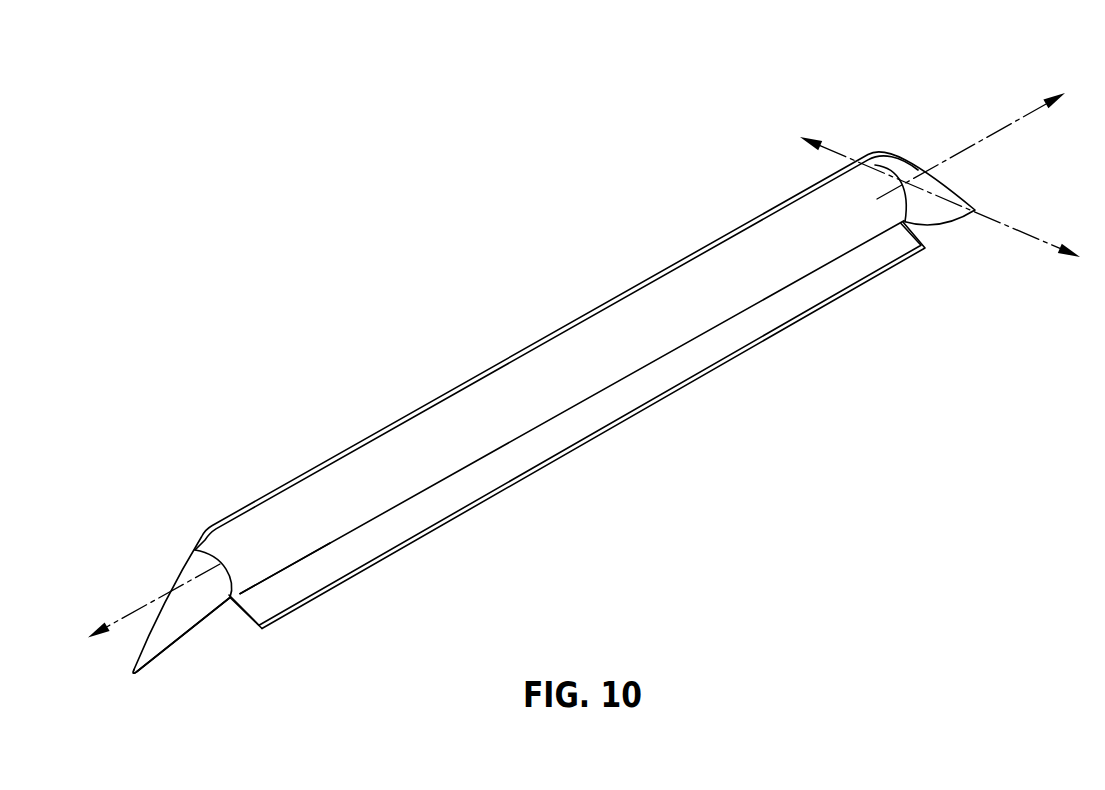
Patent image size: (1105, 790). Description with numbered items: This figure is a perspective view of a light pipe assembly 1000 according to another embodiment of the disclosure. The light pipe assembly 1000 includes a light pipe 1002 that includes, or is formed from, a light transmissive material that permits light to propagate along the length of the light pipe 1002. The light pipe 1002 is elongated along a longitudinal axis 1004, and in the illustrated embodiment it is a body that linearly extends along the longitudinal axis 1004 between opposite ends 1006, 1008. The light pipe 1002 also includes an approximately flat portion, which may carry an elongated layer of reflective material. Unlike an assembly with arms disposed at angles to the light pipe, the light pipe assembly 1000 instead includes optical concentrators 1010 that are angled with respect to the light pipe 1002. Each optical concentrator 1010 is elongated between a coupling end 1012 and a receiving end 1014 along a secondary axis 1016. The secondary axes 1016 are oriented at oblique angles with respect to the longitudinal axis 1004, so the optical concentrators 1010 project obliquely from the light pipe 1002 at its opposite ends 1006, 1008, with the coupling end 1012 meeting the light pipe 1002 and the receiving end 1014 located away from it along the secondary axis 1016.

The light pipe assembly 1000 is at (291, 145).
The light pipe 1002 is at (453, 519).
The longitudinal axis 1004 is at (1015, 123).
The end 1006 is at (213, 568).
The end 1008 is at (900, 200).
The optical concentrator 1010 is at (203, 623).
The coupling end 1012 is at (231, 593).
The receiving end 1014 is at (138, 677).
The secondary axis 1016 is at (1002, 227).